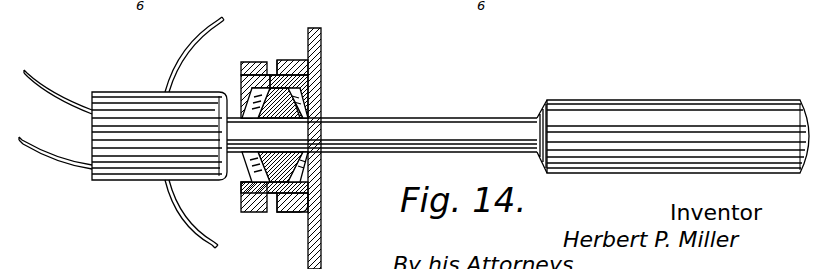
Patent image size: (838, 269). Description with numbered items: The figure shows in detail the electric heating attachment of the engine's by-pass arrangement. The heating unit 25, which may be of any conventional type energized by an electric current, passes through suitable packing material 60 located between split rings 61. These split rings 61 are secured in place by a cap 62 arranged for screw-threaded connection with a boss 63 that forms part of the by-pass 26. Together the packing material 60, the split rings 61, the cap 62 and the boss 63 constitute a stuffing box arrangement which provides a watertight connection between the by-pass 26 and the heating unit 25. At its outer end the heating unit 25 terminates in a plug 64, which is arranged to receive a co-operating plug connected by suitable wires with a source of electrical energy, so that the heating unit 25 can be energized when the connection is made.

The heating unit 25 is at (645, 107).
The by-pass 26 is at (321, 37).
The packing material 60 is at (298, 106).
The split rings 61 is at (258, 181).
The cap 62 is at (252, 61).
The boss 63 is at (285, 59).
The plug 64 is at (129, 177).